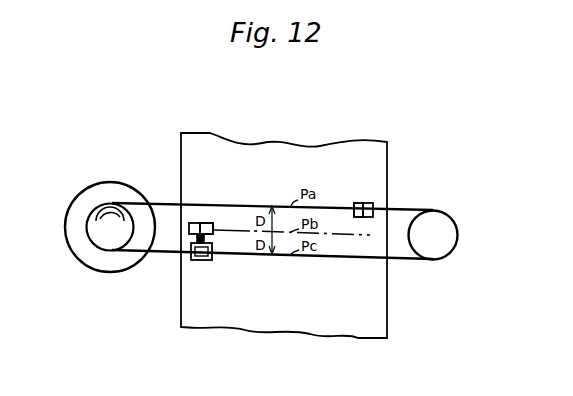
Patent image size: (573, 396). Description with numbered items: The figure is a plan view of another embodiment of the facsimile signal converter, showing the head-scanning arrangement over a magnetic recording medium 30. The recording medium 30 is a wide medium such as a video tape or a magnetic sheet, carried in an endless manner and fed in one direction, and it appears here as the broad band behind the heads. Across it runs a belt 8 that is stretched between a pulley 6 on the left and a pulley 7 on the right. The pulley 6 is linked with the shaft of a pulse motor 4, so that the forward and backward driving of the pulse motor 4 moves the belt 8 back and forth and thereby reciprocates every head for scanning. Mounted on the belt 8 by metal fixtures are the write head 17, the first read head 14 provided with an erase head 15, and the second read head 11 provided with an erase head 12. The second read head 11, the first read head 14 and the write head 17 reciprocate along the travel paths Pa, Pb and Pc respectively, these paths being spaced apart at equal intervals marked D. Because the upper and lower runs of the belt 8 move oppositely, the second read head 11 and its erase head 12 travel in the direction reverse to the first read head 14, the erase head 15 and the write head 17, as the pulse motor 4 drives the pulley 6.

The pulse motor 4 is at (75, 257).
The pulley 6 is at (108, 236).
The pulley 7 is at (440, 252).
The belt 8 is at (150, 253).
The second read head 11 is at (368, 203).
The erase head 12 is at (358, 203).
The first read head 14 is at (205, 223).
The erase head 15 is at (195, 223).
The write head 17 is at (195, 262).
The magnetic recording medium 30 is at (284, 220).